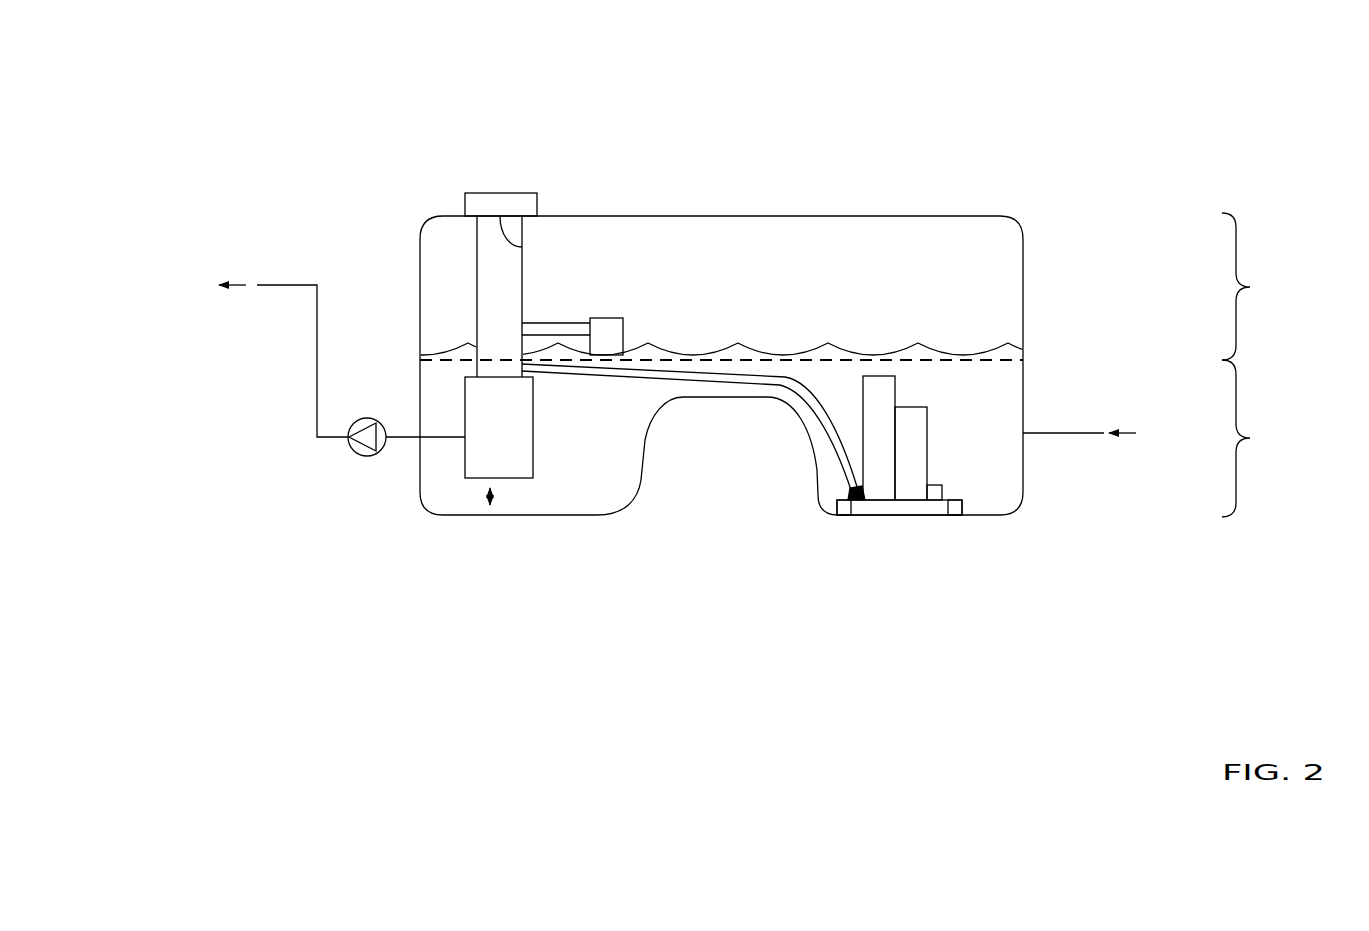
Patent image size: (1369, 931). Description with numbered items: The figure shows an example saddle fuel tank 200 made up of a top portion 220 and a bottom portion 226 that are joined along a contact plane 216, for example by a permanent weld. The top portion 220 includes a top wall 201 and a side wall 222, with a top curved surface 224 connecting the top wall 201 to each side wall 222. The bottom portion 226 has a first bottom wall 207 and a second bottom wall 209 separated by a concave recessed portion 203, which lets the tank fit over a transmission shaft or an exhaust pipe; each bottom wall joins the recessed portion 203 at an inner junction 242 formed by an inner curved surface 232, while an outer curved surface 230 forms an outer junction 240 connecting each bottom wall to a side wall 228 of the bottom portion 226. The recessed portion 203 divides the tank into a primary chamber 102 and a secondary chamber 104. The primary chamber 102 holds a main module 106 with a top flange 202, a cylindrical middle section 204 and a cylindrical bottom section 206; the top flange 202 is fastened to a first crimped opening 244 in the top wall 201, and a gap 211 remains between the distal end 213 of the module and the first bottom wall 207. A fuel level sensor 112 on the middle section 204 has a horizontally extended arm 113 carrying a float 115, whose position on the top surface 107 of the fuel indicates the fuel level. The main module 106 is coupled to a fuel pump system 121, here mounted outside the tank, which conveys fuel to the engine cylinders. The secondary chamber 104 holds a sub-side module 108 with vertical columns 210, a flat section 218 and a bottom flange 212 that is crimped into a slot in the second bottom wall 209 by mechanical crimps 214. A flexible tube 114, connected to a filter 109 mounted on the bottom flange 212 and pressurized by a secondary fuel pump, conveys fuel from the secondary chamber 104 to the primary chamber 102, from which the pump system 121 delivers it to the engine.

The saddle fuel tank 200 is at (205, 112).
The top wall 201 is at (718, 216).
The top flange 202 is at (500, 193).
The cylindrical middle section 204 is at (493, 288).
The first crimped opening 244 is at (522, 248).
The cylindrical bottom section 206 is at (522, 390).
The distal end 213 is at (522, 480).
The gap 211 is at (487, 516).
The horizontally extended arm 113 is at (535, 324).
The float 115 is at (624, 323).
The fuel level sensor 112 is at (625, 299).
The main module 106 is at (575, 277).
The top surface 107 is at (768, 353).
The flexible tube 114 is at (645, 377).
The filter 109 is at (845, 495).
The vertical columns 210 is at (903, 407).
The flat section 218 is at (928, 485).
The bottom flange 212 is at (898, 515).
The mechanical crimps 214 is at (845, 517).
The sub-side module 108 is at (949, 415).
The secondary chamber 104 is at (1011, 441).
The primary chamber 102 is at (624, 465).
The recessed portion 203 is at (693, 431).
The first bottom wall 207 is at (596, 515).
The inner curved surface 232 is at (633, 519).
The inner junction 242 is at (654, 531).
The fuel pump system 121 is at (340, 440).
The contact plane 216 is at (420, 363).
The bottom portion 226 is at (1161, 438).
The top portion 220 is at (1261, 286).
The top curved surface 224 is at (407, 212).
The side wall 222 is at (412, 245).
The side wall 228 is at (418, 463).
The second bottom wall 209 is at (987, 515).
The outer curved surface 230 is at (431, 516).
The outer junction 240 is at (397, 515).